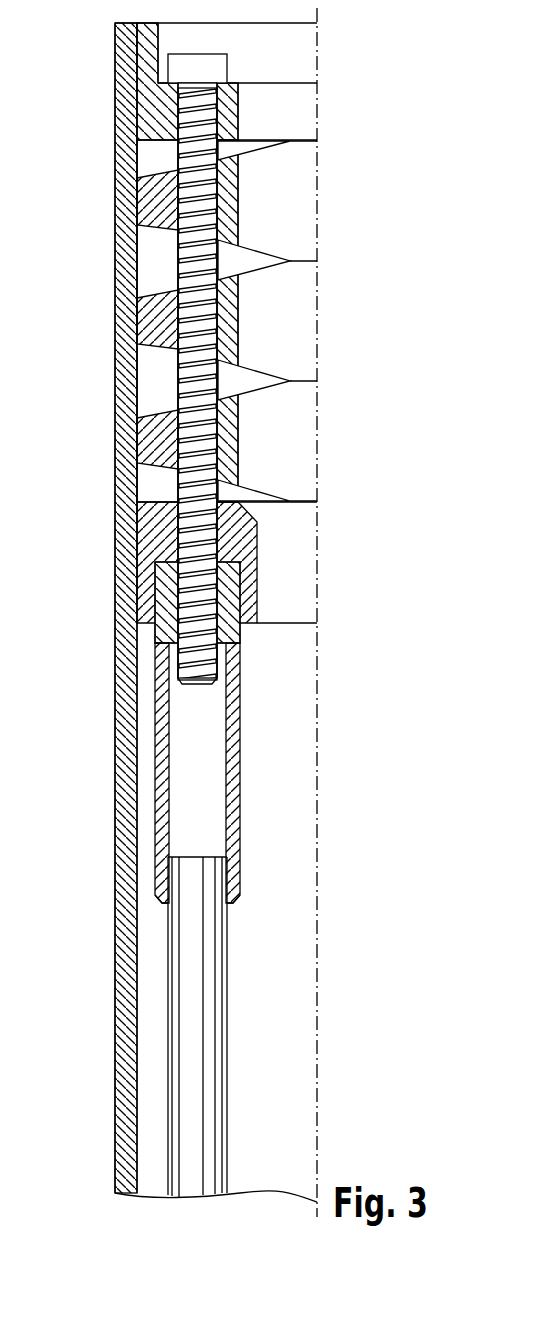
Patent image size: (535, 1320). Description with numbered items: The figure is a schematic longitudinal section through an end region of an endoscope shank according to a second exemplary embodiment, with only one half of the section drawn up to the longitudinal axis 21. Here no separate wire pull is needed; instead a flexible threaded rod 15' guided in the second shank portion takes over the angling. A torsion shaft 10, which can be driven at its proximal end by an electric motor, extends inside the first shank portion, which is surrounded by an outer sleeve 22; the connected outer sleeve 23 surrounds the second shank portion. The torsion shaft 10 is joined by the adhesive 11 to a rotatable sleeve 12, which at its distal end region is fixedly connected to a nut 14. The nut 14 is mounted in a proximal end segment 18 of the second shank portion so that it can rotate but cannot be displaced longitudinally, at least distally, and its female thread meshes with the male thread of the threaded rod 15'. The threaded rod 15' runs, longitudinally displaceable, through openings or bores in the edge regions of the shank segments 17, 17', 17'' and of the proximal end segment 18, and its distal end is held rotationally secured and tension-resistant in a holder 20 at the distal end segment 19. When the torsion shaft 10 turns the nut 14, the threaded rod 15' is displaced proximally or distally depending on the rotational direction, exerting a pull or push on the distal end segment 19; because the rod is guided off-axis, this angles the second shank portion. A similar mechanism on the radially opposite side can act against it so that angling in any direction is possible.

The torsion shaft 10 is at (188, 1047).
The adhesive 11 is at (170, 907).
The rotatable sleeve 12 is at (168, 802).
The nut 14 is at (168, 605).
The flexible threaded rod 15' is at (136, 383).
The shank segment 17 is at (116, 439).
The shank segment 17' is at (116, 319).
The shank segment 17'' is at (116, 200).
The proximal end segment 18 is at (152, 536).
The distal end segment 19 is at (157, 121).
The holder 20 is at (180, 70).
The longitudinal axis 21 is at (320, 42).
The outer sleeve 22 is at (122, 636).
The outer sleeve 23 is at (128, 490).